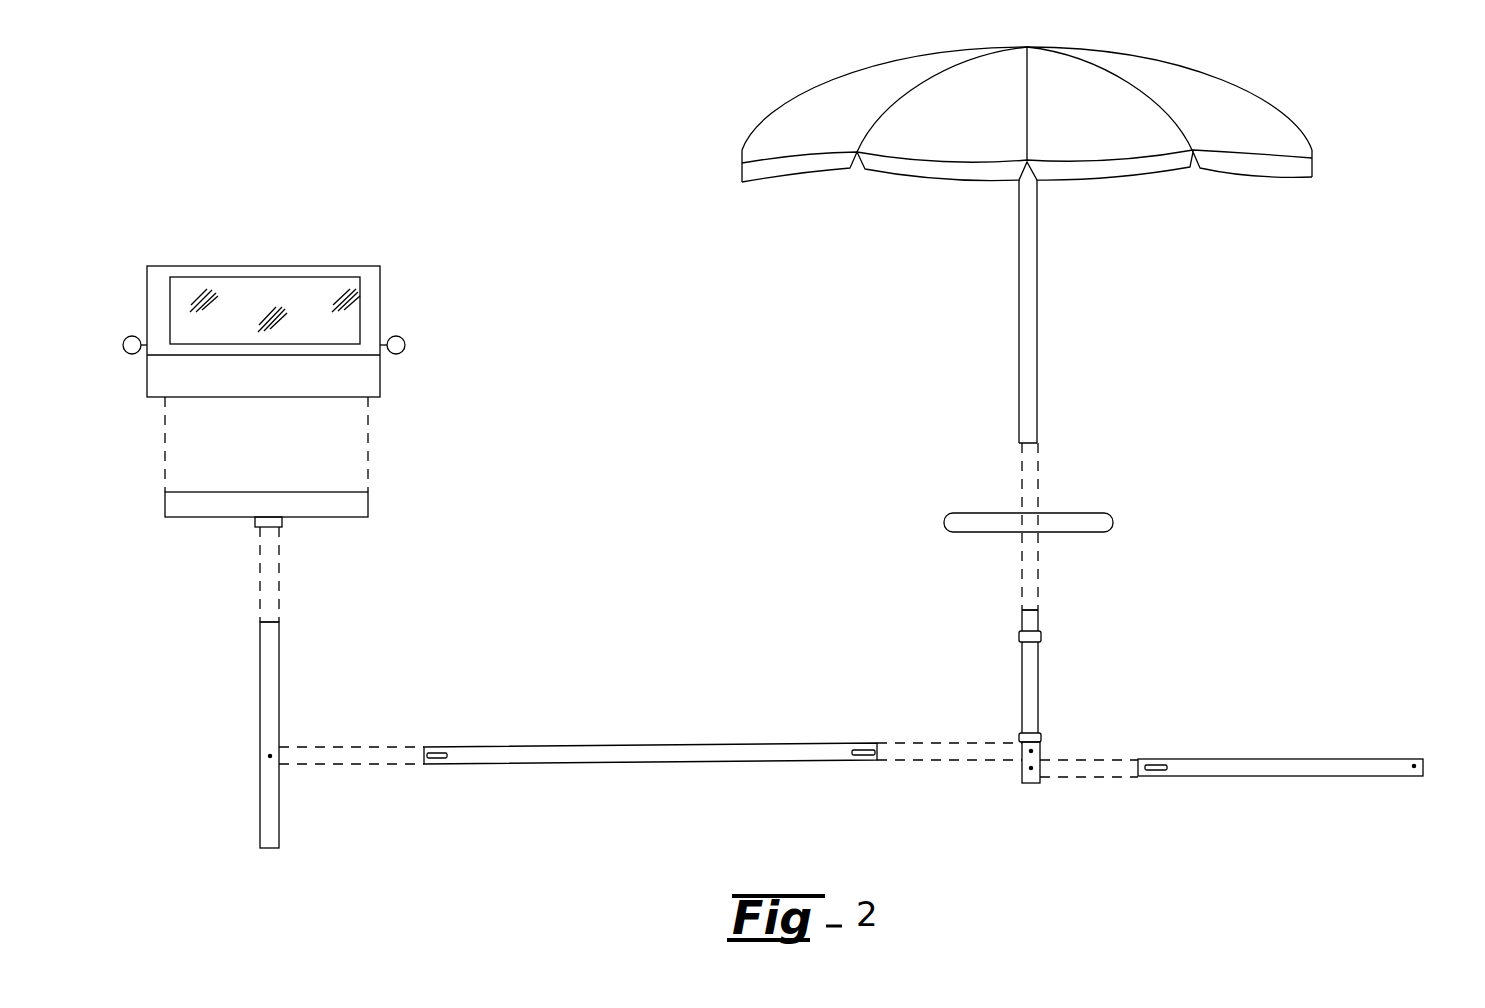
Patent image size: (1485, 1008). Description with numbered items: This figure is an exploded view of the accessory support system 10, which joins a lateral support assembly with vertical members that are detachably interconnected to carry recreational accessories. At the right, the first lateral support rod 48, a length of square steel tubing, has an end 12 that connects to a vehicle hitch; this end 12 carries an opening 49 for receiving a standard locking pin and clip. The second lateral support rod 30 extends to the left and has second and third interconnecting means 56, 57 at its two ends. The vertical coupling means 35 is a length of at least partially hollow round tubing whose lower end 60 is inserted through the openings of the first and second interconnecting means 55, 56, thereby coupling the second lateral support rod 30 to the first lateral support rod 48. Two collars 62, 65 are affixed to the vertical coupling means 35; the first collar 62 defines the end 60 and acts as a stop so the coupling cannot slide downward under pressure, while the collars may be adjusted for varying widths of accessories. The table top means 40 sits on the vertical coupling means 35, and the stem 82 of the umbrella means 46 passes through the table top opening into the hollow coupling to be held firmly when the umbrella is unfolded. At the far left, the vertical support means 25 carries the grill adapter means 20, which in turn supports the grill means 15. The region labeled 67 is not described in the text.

The support system 10 is at (628, 163).
The end of first lateral support rod 12 is at (1403, 737).
The grill means 15 is at (217, 272).
The grill adapter means 20 is at (213, 512).
The vertical support means 25 is at (268, 703).
The second lateral support rod 30 is at (670, 762).
The vertical coupling means 35 is at (1073, 673).
The table top means 40 is at (1088, 520).
The umbrella means 46 is at (1263, 93).
The first lateral support rod 48 is at (1290, 768).
The opening 49 is at (1412, 776).
The first interconnecting means 55 is at (1157, 778).
The second interconnecting means 56 is at (862, 743).
The third interconnecting means 57 is at (437, 765).
The end of vertical coupling means 60 is at (1020, 775).
The first collar 62 is at (1041, 735).
The second collar 65 is at (1019, 636).
The pole section 67 is at (1040, 620).
The stem 82 is at (1030, 295).